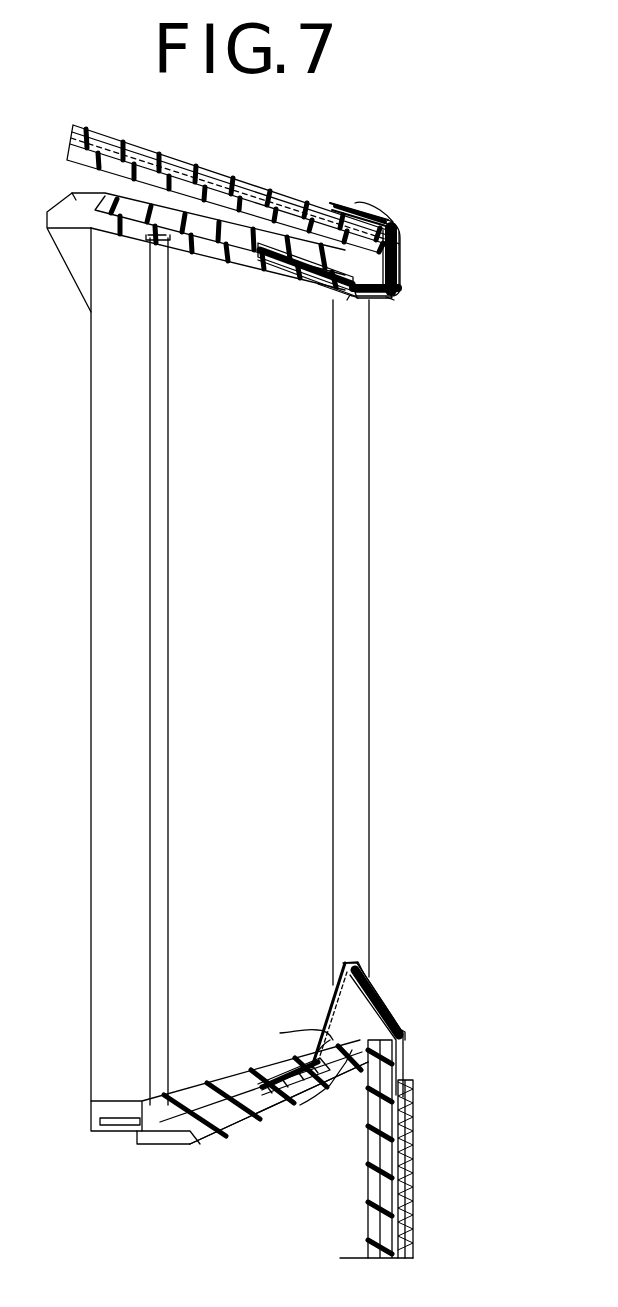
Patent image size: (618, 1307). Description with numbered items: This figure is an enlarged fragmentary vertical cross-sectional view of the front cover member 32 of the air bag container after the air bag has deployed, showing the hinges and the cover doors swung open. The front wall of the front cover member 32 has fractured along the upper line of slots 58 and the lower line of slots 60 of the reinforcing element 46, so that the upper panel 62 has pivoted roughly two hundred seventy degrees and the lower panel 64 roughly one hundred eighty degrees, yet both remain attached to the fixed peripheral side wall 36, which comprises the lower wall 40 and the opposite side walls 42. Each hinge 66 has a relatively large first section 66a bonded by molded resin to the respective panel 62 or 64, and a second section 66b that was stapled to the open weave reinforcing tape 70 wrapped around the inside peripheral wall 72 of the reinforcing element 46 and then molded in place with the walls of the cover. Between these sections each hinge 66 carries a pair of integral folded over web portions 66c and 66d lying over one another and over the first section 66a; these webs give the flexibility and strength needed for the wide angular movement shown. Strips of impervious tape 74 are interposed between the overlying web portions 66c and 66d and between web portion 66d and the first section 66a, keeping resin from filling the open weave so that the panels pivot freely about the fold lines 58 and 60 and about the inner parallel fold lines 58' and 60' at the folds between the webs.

The front cover member 32 is at (246, 1266).
The peripheral side wall 36 is at (89, 578).
The lower wall 40 is at (158, 1143).
The side walls 42 is at (267, 568).
The reinforcing element 46 is at (237, 1137).
The upper edge slots 58 is at (331, 323).
The inner parallel fold line 58' is at (426, 308).
The lower edge slots 60 is at (288, 1043).
The inner parallel fold line 60' is at (388, 945).
The upper panel 62 is at (68, 147).
The lower panel 64 is at (370, 1240).
The hinge 66 is at (287, 283).
The first hinge section 66a is at (372, 212).
The second hinge section 66b is at (268, 262).
The folded over web portion 66c is at (358, 297).
The folded over web portion 66d is at (399, 262).
The reinforcing tape 70 is at (337, 203).
The inside peripheral wall 72 is at (108, 230).
The impervious tape strips 74 is at (396, 246).